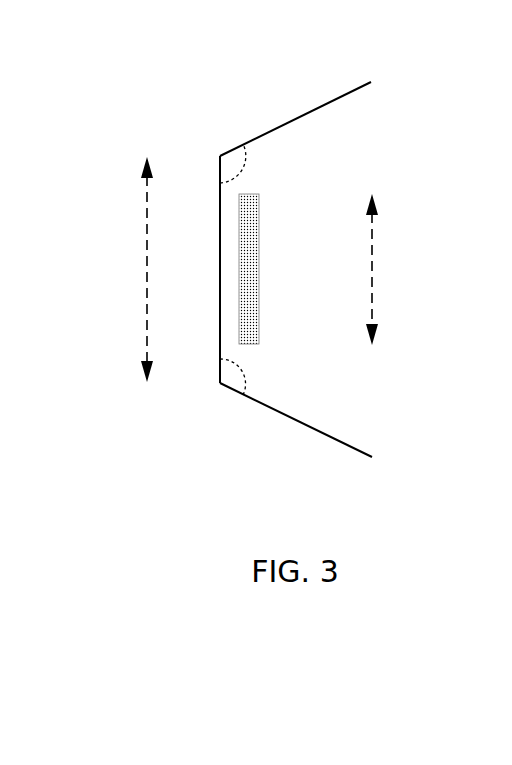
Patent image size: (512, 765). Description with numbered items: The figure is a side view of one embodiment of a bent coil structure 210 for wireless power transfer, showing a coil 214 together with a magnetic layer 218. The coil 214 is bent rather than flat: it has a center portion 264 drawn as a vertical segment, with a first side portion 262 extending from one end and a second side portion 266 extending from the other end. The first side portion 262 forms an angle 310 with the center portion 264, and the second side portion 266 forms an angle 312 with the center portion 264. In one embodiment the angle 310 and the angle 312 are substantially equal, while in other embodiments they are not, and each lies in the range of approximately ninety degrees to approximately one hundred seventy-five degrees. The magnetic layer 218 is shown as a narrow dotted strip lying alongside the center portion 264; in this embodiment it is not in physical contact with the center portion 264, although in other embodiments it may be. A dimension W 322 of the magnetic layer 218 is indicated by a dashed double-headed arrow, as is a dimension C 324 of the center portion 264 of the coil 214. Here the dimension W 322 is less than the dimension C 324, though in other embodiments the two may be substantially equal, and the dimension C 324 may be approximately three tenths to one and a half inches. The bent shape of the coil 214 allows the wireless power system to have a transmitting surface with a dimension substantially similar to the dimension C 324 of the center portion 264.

The bent coil structure 210 is at (230, 272).
The coil 214 is at (295, 96).
The magnetic layer 218 is at (259, 308).
The first side portion 262 is at (263, 134).
The center portion 264 is at (220, 247).
The second side portion 266 is at (289, 417).
The angle 310 is at (239, 168).
The angle 312 is at (243, 384).
The dimension W 322 is at (372, 249).
The dimension C 324 is at (148, 304).